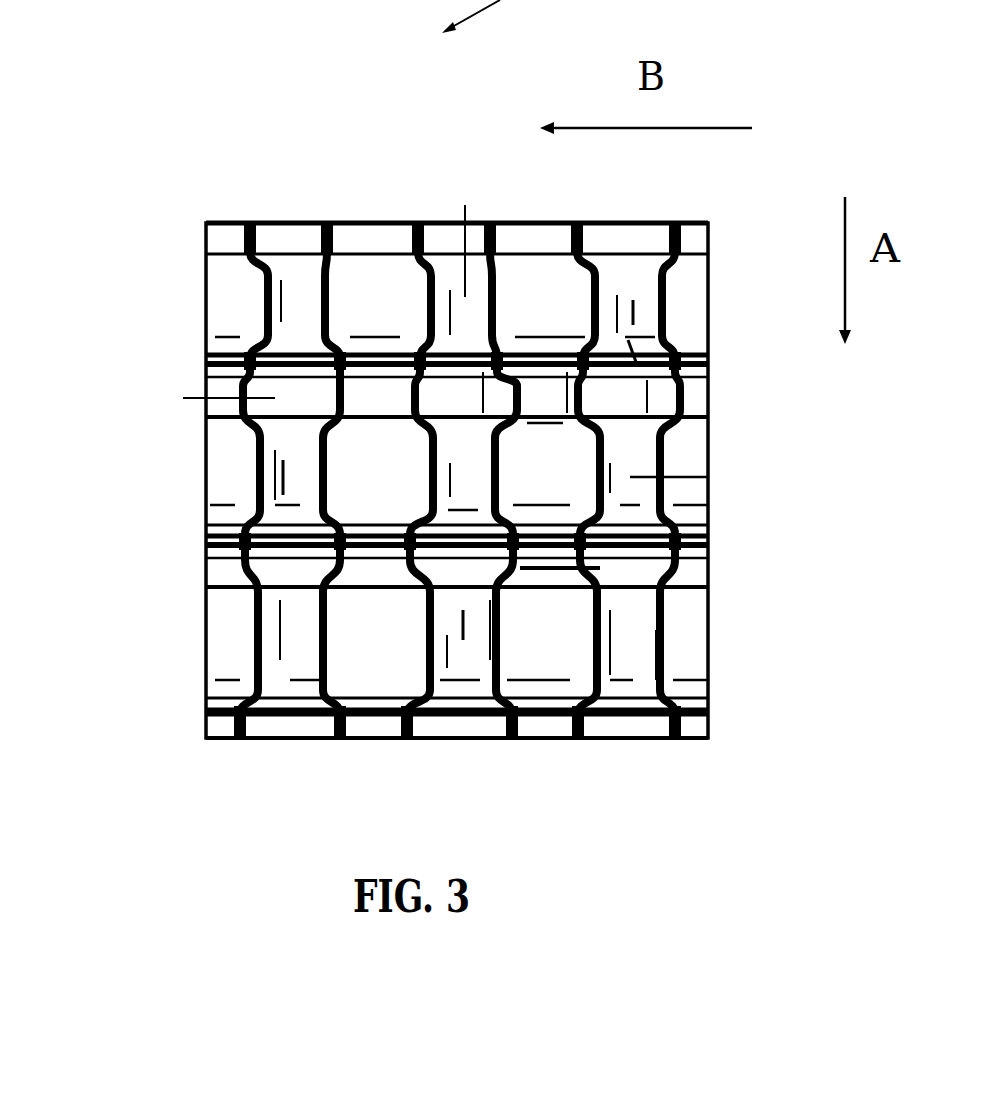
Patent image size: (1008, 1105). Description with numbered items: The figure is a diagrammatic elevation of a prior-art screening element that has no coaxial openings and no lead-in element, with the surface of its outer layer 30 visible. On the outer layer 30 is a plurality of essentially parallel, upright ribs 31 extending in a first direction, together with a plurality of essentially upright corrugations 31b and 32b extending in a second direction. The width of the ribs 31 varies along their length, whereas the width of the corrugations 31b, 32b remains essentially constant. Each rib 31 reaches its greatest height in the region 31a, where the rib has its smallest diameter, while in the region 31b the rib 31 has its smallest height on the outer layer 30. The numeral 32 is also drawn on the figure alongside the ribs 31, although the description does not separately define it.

The outer layer 30 is at (435, 474).
The rib 31 is at (288, 276).
The region of greatest rib height 31a is at (630, 313).
The corrugation / region of smallest rib height 31b is at (612, 338).
The weft yarn 32 is at (371, 287).
The corrugation 32b is at (548, 567).